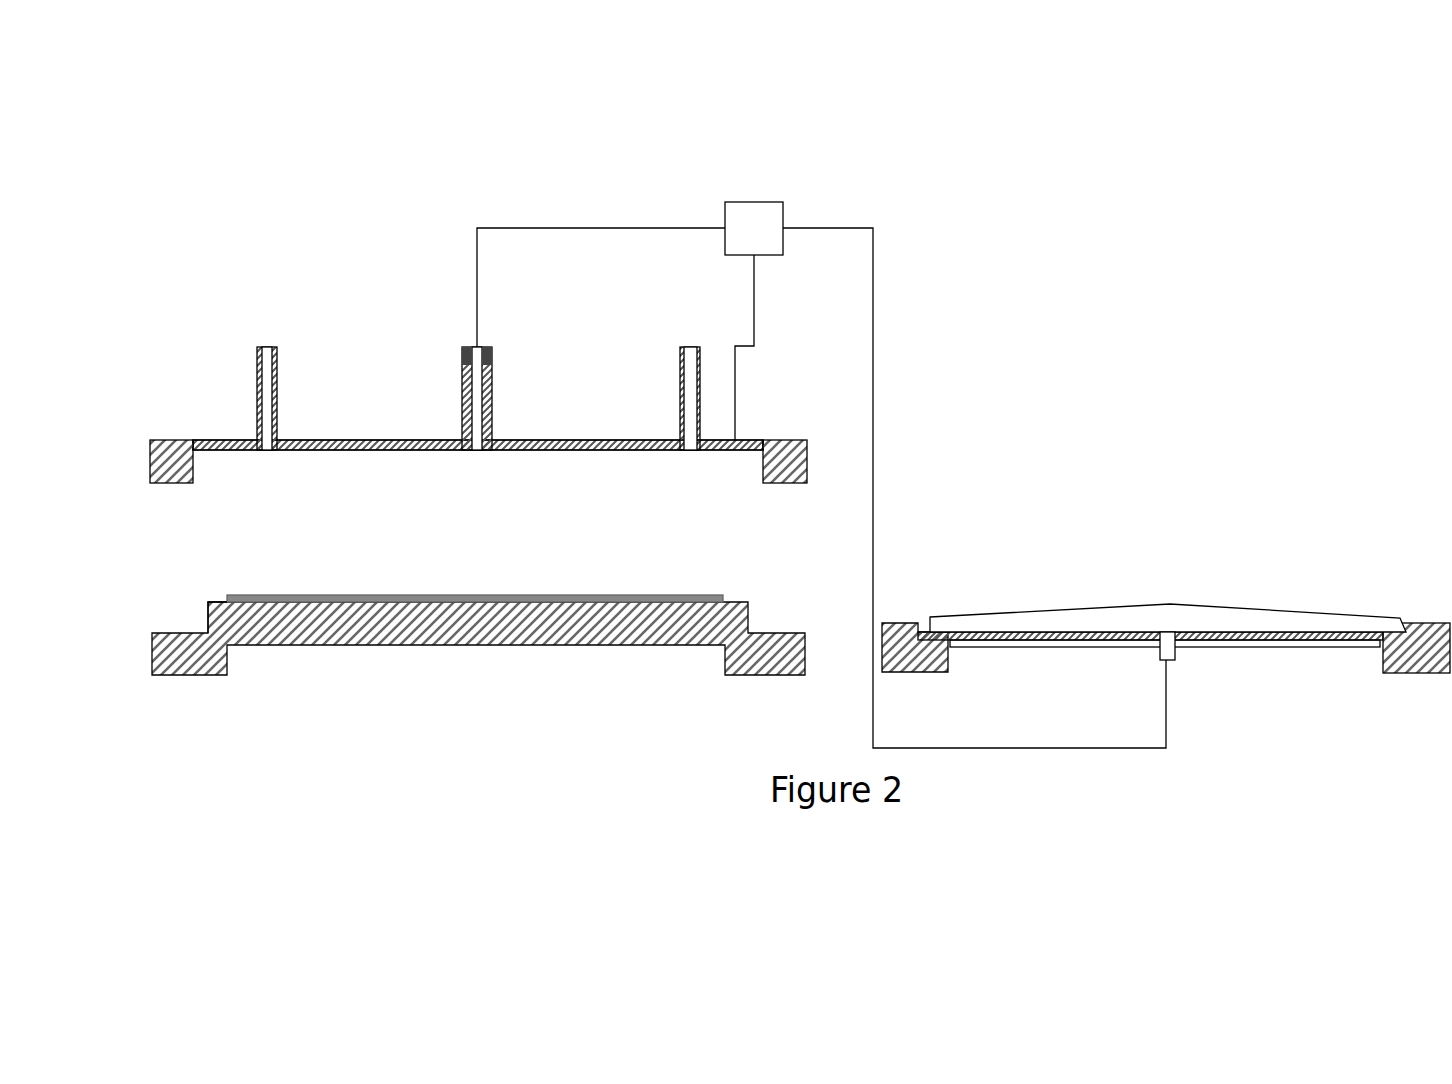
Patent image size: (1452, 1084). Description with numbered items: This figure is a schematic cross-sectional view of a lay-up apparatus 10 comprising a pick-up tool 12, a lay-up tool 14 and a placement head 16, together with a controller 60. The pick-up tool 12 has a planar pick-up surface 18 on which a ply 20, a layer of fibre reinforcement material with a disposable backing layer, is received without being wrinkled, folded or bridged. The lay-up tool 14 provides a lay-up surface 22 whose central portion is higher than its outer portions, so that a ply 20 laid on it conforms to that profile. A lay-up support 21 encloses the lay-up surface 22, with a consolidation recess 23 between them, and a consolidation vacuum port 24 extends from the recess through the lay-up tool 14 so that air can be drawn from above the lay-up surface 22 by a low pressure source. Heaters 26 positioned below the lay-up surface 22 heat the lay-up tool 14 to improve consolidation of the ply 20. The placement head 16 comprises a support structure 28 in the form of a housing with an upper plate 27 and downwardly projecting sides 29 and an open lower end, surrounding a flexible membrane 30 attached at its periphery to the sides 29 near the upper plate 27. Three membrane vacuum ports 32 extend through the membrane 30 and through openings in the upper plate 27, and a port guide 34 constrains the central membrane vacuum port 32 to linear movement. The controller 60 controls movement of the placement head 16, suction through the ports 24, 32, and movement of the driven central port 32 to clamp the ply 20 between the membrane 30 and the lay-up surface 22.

The lay-up apparatus 10 is at (1056, 338).
The pick-up tool 12 is at (464, 658).
The lay-up tool 14 is at (1166, 611).
The placement head 16 is at (475, 376).
The pick-up surface 18 is at (228, 592).
The ply 20 is at (430, 595).
The lay-up support 21 is at (905, 652).
The lay-up surface 22 is at (1282, 600).
The consolidation recess 23 is at (1405, 630).
The consolidation vacuum port 24 is at (1160, 660).
The heater 26 is at (1288, 648).
The upper plate 27 is at (566, 440).
The support structure 28 is at (799, 441).
The side 29 is at (176, 465).
The flexible membrane 30 is at (583, 450).
The membrane vacuum port 32 is at (478, 340).
The port guide 34 is at (462, 391).
The controller 60 is at (762, 213).